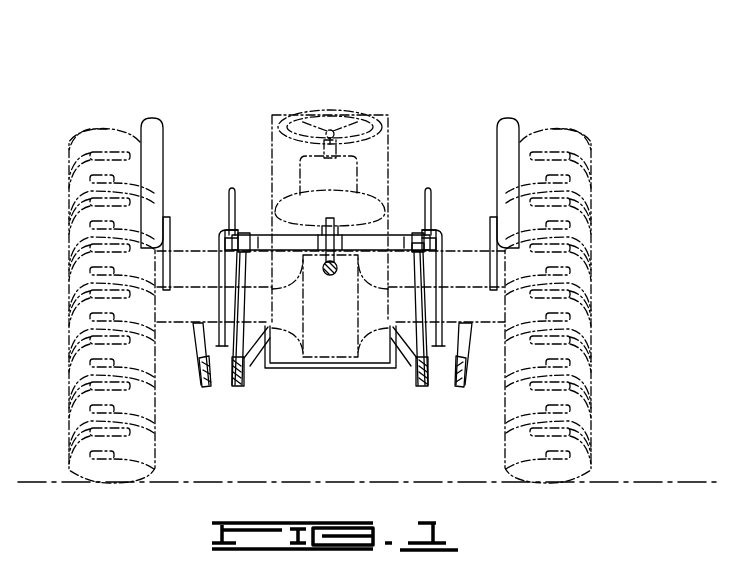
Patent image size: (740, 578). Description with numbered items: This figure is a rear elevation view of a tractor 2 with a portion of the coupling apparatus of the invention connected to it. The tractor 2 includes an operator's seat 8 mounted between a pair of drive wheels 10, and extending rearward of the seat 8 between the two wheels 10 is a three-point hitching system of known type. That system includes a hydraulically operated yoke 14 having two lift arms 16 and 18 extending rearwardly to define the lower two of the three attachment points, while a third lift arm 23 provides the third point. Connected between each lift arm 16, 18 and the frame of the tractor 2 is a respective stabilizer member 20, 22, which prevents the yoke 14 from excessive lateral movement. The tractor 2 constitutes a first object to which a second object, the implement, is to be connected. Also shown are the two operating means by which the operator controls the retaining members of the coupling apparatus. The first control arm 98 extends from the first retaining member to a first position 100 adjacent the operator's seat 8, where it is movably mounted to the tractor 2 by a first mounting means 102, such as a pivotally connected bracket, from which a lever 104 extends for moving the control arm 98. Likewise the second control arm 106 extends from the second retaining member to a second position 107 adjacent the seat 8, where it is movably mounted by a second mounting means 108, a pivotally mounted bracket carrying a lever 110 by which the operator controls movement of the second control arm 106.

The tractor 2 is at (306, 106).
The operator's seat 8 is at (374, 202).
The drive wheels 10 is at (564, 124).
The hydraulically operated yoke 14 is at (402, 369).
The lift arm 16 is at (417, 370).
The lift arm 18 is at (247, 368).
The stabilizer member 20 is at (470, 361).
The stabilizer member 22 is at (199, 362).
The third lift arm 23 is at (337, 262).
The first control arm 98 is at (444, 277).
The first position 100 is at (441, 226).
The first mounting means 102 is at (428, 250).
The lever 104 is at (432, 200).
The second control arm 106 is at (219, 250).
The second position 107 is at (244, 220).
The second mounting means 108 is at (232, 253).
The lever 110 is at (230, 192).